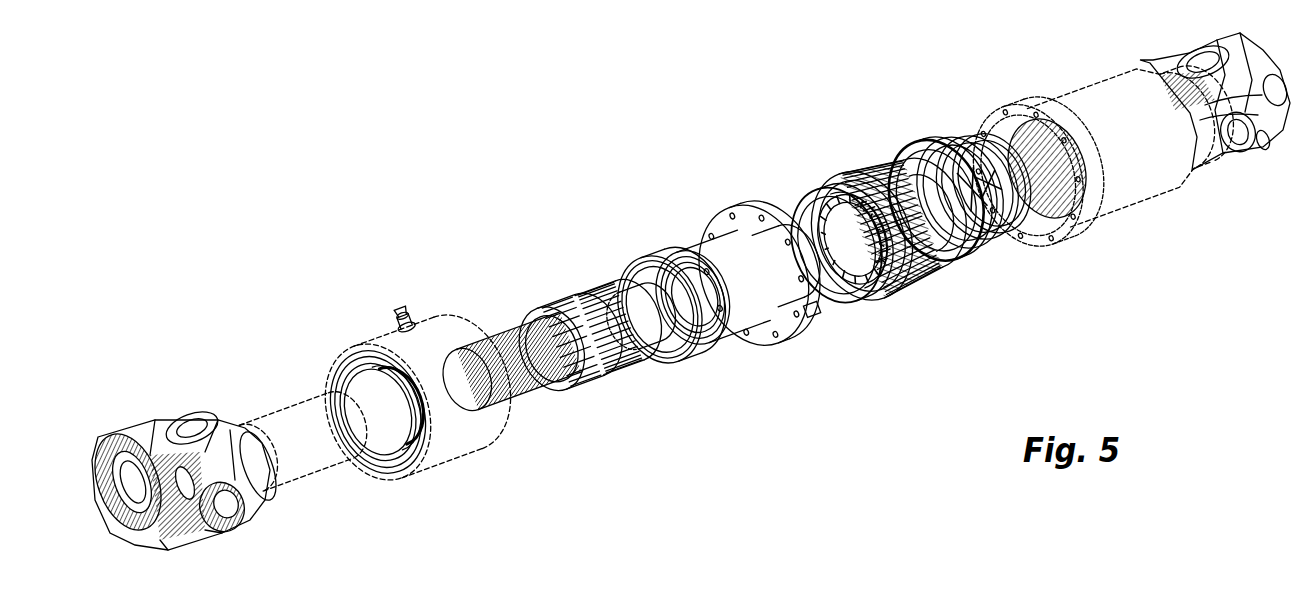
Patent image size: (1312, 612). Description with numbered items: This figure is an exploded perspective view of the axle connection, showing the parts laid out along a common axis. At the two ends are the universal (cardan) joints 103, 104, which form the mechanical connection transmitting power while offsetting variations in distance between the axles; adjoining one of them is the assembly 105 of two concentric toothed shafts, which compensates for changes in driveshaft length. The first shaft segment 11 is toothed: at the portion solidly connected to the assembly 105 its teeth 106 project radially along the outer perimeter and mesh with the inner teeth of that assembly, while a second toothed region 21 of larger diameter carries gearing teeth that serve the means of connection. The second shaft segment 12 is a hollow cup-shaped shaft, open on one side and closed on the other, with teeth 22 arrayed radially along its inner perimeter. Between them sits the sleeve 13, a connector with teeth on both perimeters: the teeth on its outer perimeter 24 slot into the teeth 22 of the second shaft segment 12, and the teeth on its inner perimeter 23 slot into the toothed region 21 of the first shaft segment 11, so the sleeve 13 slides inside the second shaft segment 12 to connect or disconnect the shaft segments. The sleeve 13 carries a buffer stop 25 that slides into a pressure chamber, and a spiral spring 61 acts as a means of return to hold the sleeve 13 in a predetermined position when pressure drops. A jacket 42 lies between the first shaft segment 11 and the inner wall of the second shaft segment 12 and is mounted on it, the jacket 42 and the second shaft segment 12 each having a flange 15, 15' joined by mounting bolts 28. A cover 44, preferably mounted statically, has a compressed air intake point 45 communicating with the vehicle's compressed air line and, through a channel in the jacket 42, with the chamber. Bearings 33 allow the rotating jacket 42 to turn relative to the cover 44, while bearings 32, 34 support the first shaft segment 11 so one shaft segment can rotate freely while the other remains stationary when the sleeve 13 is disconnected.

The first shaft segment 11 is at (625, 296).
The second shaft segment 12 is at (1140, 182).
The sleeve 13 is at (858, 151).
The flange 15 is at (1038, 189).
The flange 15' is at (820, 338).
The second toothed region 21 is at (613, 372).
The teeth 22 is at (1018, 126).
The inner perimeter teeth 23 is at (840, 226).
The outer perimeter teeth 24 is at (920, 277).
The buffer stop 25 is at (860, 292).
The mounting bolts 28 is at (770, 202).
The bearing 32 is at (557, 302).
The bearing 33 is at (326, 386).
The bearing 34 is at (683, 336).
The jacket 42 is at (757, 322).
The cover 44 is at (458, 442).
The compressed air intake point 45 is at (405, 316).
The spiral spring 61 is at (955, 150).
The universal (cardan) joint 103 is at (1237, 134).
The universal (cardan) joint 104 is at (228, 512).
The assembly of two concentric toothed shafts 105 is at (298, 472).
The teeth 106 is at (542, 382).